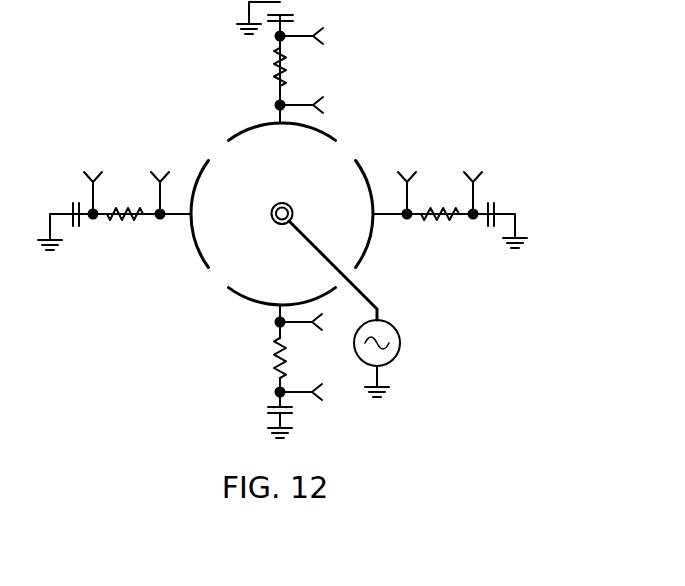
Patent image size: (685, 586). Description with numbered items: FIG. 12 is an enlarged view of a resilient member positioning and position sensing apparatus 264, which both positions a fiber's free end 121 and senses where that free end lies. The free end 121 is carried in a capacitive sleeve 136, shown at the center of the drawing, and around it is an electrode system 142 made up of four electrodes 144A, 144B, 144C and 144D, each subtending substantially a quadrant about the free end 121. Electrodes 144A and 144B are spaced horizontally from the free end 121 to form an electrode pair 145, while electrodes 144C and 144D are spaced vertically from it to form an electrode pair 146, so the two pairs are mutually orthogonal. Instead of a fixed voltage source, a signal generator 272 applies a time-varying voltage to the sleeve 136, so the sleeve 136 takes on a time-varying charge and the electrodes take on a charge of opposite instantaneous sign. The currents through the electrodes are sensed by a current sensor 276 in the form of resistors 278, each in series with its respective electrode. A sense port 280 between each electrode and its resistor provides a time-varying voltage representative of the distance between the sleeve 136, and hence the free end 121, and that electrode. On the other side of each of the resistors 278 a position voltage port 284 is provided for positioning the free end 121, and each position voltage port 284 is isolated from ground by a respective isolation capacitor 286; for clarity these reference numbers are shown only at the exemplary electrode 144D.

The free end 121 is at (272, 208).
The sleeve 136 is at (282, 219).
The electrode system 142 is at (280, 193).
The electrode 144A is at (188, 228).
The electrode 144B is at (377, 233).
The electrode 144C is at (332, 133).
The electrode 144D is at (247, 305).
The electrode pair 145 is at (148, 210).
The electrode pair 146 is at (278, 87).
The positioning and position sensing apparatus 264 is at (507, 140).
The signal generator 272 is at (400, 343).
The current sensor 276 is at (234, 386).
The resistors 278 is at (277, 361).
The sense port 280 is at (323, 331).
The position voltage port 284 is at (323, 402).
The isolation capacitor 286 is at (268, 413).